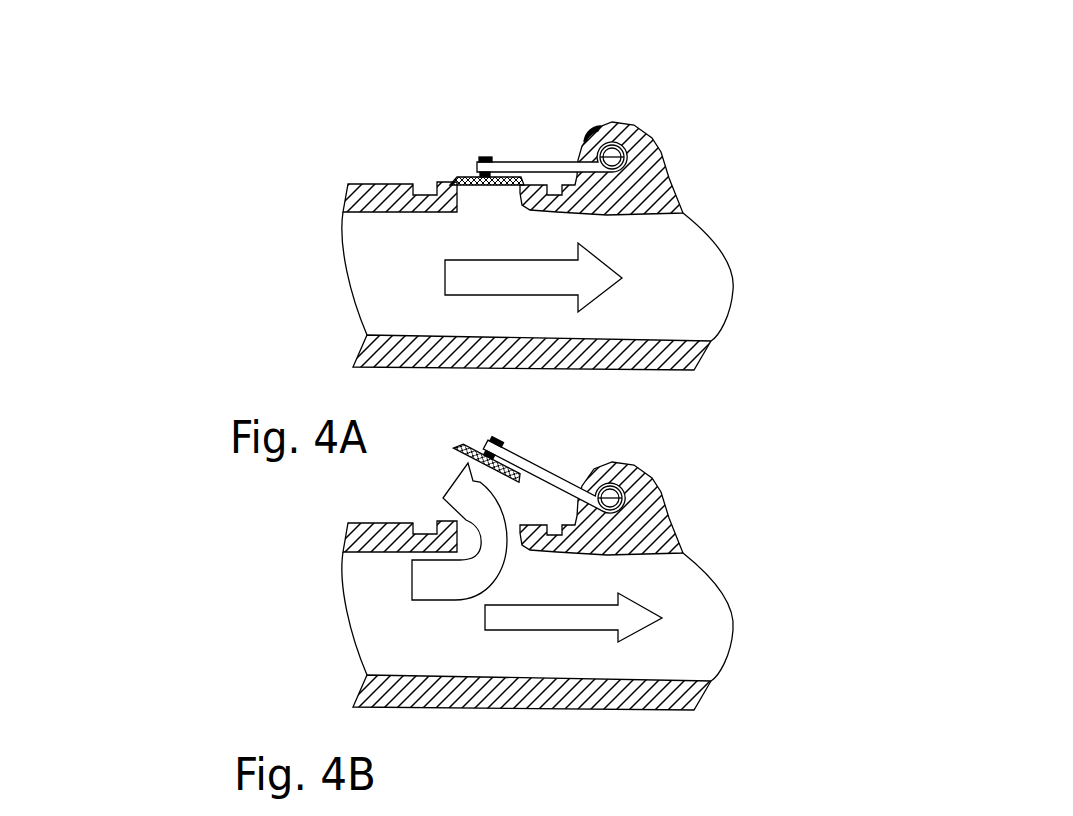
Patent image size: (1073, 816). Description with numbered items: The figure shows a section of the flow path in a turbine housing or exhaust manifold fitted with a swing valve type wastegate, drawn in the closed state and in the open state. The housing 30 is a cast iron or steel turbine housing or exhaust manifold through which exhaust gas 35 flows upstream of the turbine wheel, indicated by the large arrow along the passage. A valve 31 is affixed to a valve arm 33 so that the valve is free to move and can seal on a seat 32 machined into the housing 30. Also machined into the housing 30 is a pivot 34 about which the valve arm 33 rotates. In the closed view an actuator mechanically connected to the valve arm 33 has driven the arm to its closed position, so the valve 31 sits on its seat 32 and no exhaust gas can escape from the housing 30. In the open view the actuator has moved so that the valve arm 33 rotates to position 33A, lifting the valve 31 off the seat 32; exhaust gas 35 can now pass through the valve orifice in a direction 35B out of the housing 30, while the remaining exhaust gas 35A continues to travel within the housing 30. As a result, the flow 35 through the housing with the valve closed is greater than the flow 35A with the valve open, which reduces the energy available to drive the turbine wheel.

In FIG. 4A, the housing 30 is at (687, 353).
In FIG. 4A, the valve 31 is at (453, 175).
In FIG. 4A, the seat 32 is at (513, 193).
In FIG. 4A, the valve arm 33 is at (545, 162).
In FIG. 4B, the open position of valve arm 33A is at (538, 462).
In FIG. 4A, the pivot 34 is at (620, 152).
In FIG. 4A, the exhaust gas 35 is at (507, 280).
In FIG. 4B, the remaining exhaust gas 35A is at (557, 612).
In FIG. 4B, the direction of flow through valve orifice 35B is at (422, 580).